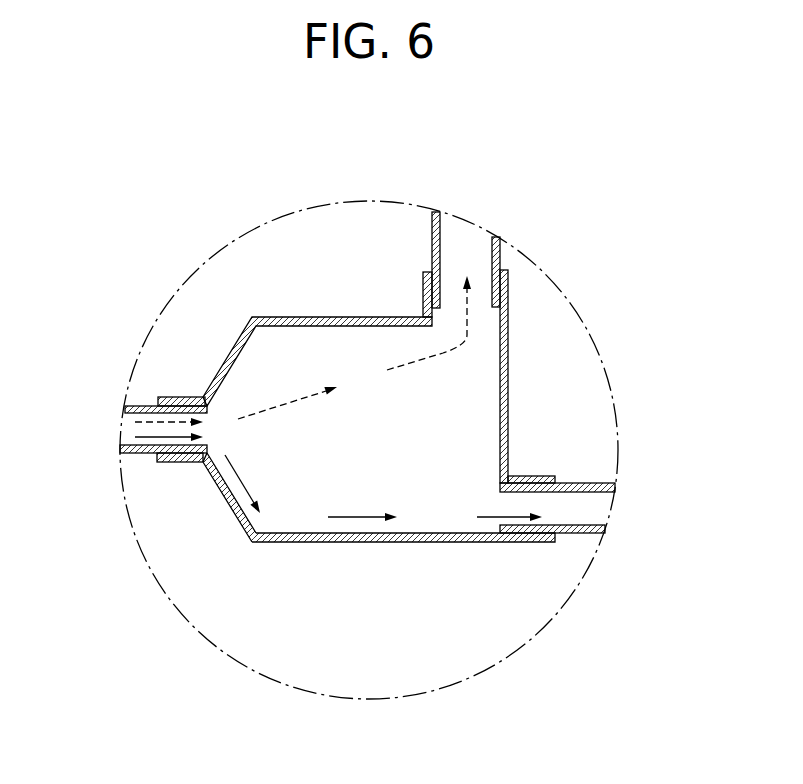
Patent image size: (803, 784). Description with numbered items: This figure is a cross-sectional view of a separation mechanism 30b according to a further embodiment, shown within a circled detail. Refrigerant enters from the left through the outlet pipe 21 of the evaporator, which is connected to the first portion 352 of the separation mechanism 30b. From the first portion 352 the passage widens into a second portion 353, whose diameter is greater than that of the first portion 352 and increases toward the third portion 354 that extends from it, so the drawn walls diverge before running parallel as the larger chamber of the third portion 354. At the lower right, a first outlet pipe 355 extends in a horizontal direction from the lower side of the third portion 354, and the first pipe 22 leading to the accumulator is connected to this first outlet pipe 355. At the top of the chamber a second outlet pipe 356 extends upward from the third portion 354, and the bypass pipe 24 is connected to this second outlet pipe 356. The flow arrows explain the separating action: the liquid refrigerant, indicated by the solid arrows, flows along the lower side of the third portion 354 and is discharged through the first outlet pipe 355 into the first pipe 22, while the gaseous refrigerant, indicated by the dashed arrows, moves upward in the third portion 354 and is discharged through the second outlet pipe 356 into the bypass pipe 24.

The separation mechanism 30b is at (330, 168).
The outlet pipe 21 is at (133, 453).
The first pipe 22 is at (582, 533).
The bypass pipe 24 is at (498, 250).
The first portion 352 is at (177, 462).
The second portion 353 is at (235, 508).
The third portion 354 is at (375, 542).
The first outlet pipe 355 is at (543, 478).
The second outlet pipe 356 is at (425, 283).